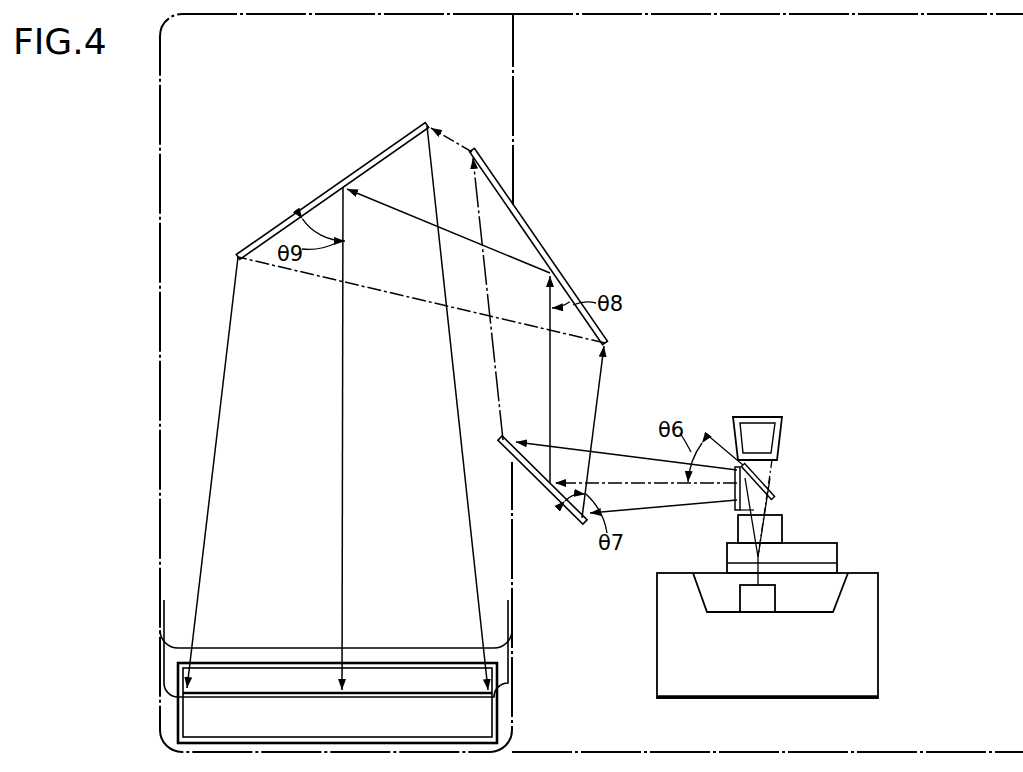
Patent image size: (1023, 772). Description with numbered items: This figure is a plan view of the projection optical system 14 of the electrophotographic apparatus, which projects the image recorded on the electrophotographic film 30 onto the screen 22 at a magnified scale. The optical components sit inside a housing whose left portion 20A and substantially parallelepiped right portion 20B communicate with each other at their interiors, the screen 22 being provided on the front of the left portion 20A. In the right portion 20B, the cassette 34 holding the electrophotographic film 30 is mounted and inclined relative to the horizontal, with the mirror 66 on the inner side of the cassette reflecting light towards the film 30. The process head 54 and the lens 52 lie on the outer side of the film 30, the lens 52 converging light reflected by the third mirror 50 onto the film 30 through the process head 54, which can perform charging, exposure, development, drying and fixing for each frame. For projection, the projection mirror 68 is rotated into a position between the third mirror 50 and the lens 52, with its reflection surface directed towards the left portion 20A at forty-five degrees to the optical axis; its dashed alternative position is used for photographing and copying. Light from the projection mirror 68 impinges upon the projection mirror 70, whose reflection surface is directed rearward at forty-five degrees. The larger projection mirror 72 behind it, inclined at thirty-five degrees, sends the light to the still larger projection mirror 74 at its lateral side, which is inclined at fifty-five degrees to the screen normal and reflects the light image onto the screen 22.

The projection optical system 14 is at (725, 386).
The left portion of housing 20A is at (325, 15).
The right portion of housing 20B is at (853, 15).
The screen 22 is at (462, 705).
The electrophotographic film 30 is at (736, 580).
The cassette 34 is at (868, 692).
The third mirror 50 is at (768, 443).
The lens 52 is at (783, 528).
The process head 54 is at (828, 555).
The mirror 66 is at (768, 600).
The projection mirror 68 is at (773, 498).
The projection mirror 70 is at (567, 508).
The projection mirror 72 is at (552, 247).
The projection mirror 74 is at (368, 163).